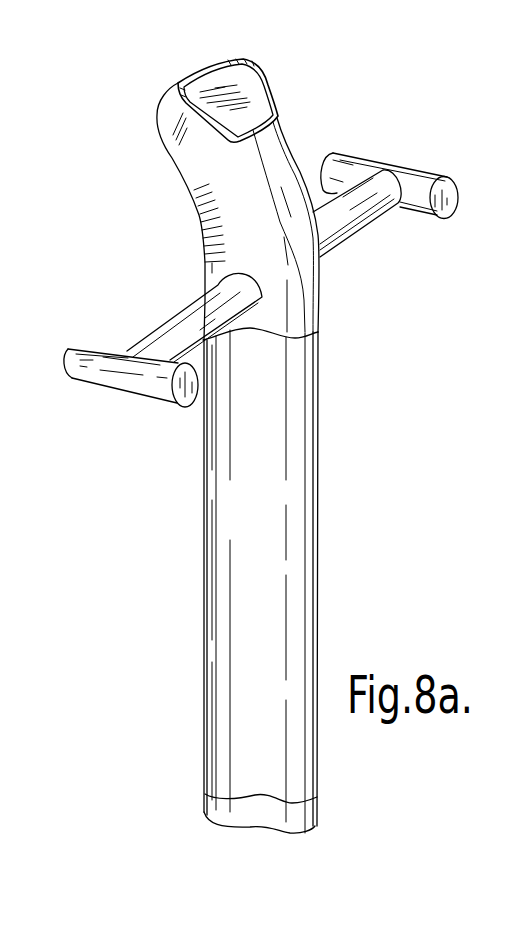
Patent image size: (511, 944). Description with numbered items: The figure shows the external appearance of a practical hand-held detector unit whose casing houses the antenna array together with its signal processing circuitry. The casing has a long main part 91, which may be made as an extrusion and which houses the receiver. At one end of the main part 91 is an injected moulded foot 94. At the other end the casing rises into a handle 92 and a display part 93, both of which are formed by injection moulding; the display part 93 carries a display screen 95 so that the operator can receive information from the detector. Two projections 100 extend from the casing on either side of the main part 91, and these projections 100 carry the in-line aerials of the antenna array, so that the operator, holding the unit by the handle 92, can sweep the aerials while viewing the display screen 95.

The main part 91 is at (328, 560).
The handle 92 is at (168, 231).
The display part 93 is at (160, 108).
The foot 94 is at (303, 833).
The display screen 95 is at (247, 90).
The projections 100 is at (408, 178).